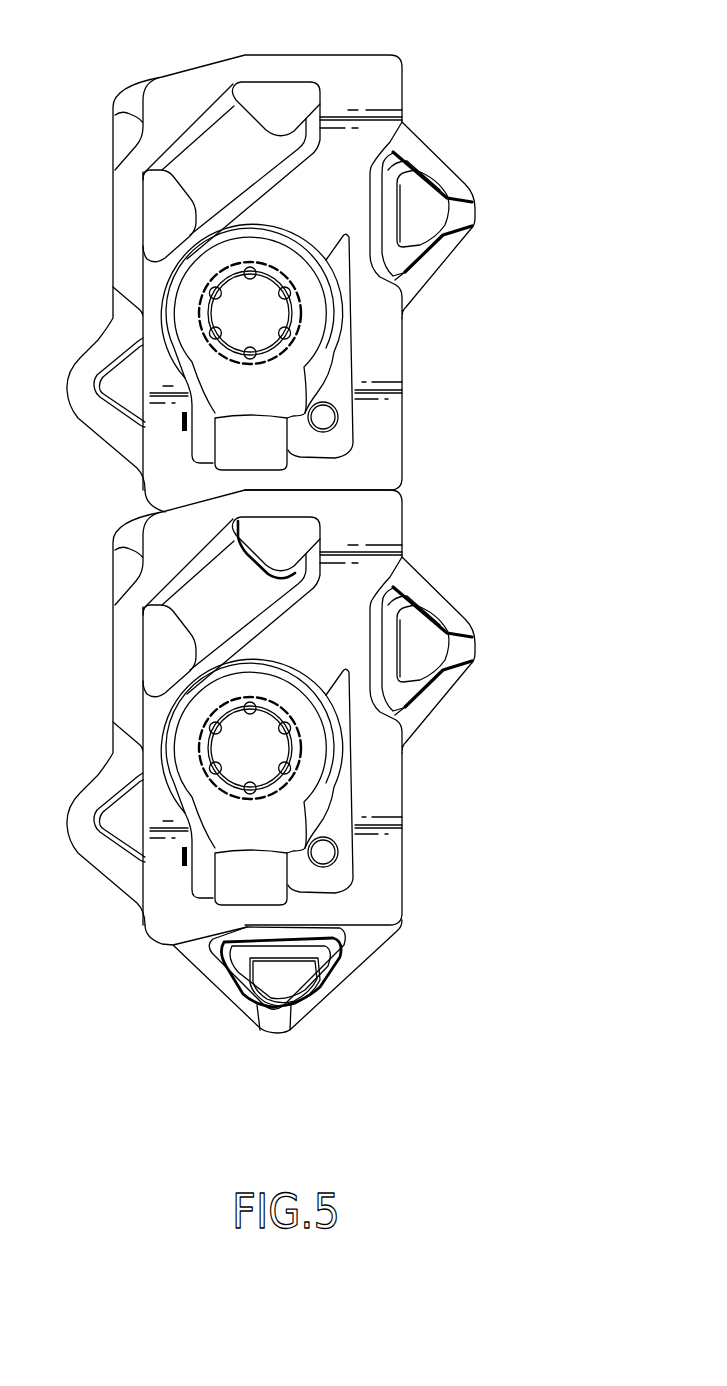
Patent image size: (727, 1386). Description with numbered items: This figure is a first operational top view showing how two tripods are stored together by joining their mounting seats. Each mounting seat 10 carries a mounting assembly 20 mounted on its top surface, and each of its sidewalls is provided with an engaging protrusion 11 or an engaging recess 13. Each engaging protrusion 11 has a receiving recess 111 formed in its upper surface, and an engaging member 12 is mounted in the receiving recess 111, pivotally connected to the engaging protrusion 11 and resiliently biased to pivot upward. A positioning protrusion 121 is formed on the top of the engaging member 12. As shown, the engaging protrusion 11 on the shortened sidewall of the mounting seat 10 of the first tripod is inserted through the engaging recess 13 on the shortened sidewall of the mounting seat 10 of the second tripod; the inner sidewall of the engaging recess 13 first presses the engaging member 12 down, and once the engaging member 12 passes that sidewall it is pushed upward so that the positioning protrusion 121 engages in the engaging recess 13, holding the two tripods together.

The mounting seat 10 is at (205, 60).
The engaging protrusion 11 is at (428, 161).
The receiving recess 111 is at (393, 157).
The engaging member 12 is at (465, 212).
The positioning protrusion 121 is at (417, 237).
The engaging recess 13 is at (289, 97).
The mounting assembly 20 is at (213, 393).